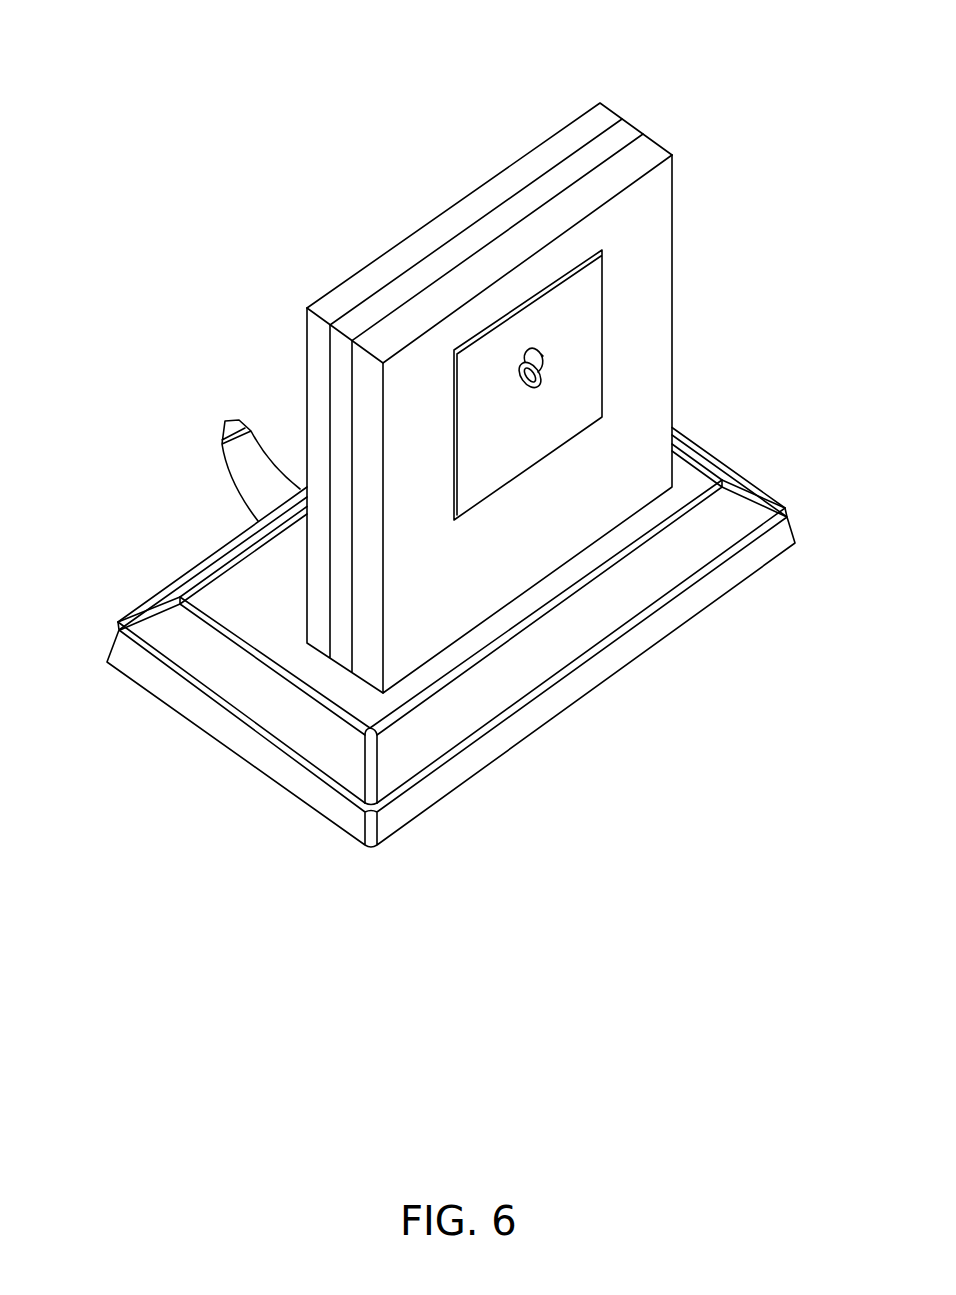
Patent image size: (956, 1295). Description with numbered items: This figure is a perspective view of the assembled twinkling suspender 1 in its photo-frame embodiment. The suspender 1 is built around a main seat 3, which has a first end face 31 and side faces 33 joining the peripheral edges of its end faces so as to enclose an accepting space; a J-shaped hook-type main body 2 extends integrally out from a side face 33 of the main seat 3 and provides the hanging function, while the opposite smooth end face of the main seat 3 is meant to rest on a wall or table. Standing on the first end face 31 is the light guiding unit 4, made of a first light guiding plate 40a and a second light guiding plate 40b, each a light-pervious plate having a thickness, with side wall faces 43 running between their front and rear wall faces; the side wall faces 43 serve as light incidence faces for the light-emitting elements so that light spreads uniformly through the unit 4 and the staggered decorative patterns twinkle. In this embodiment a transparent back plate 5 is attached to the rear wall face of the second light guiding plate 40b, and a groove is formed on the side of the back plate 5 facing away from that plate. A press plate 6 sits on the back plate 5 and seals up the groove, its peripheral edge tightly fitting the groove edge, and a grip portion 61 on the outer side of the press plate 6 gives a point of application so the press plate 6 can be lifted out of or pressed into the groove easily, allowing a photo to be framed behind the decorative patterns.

The twinkling suspender 1 is at (260, 85).
The main body 2 is at (235, 441).
The main seat 3 is at (718, 463).
The first end face 31 is at (482, 633).
The side faces 33 is at (245, 750).
The light guiding unit 4 is at (632, 86).
The first light guiding plate 40a is at (423, 232).
The second light guiding plate 40b is at (612, 139).
The side wall faces 43 is at (340, 398).
The back plate 5 is at (667, 213).
The press plate 6 is at (595, 320).
The grip portion 61 is at (550, 367).